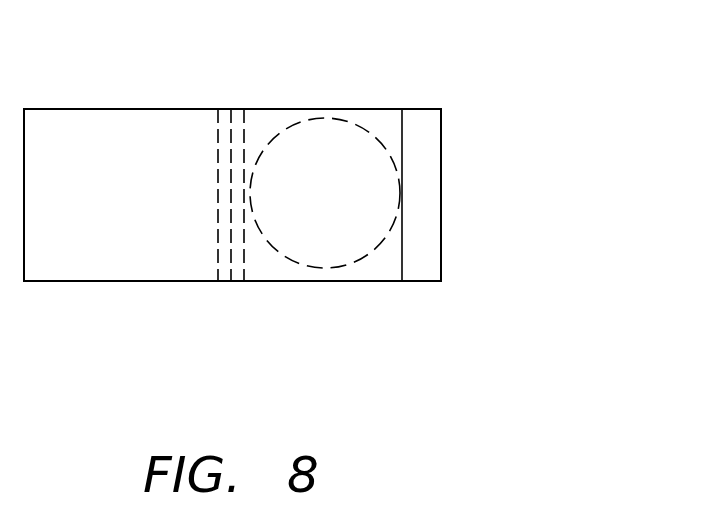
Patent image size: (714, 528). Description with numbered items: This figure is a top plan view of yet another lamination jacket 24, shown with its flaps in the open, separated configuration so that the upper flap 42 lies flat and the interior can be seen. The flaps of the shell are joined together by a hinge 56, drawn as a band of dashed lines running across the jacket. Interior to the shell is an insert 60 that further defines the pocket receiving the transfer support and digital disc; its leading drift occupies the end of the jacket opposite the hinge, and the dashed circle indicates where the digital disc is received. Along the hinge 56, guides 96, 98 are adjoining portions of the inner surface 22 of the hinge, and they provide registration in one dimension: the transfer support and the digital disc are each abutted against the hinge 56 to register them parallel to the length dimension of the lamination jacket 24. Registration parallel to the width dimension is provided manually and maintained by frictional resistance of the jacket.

The lamination jacket 24 is at (100, 100).
The hinge 56 is at (225, 108).
The insert 60 is at (422, 108).
The transfer support guide 96 is at (214, 165).
The digital disc guide 98 is at (214, 249).
The upper flap 42 is at (112, 282).
The inner surface 22 is at (235, 281).